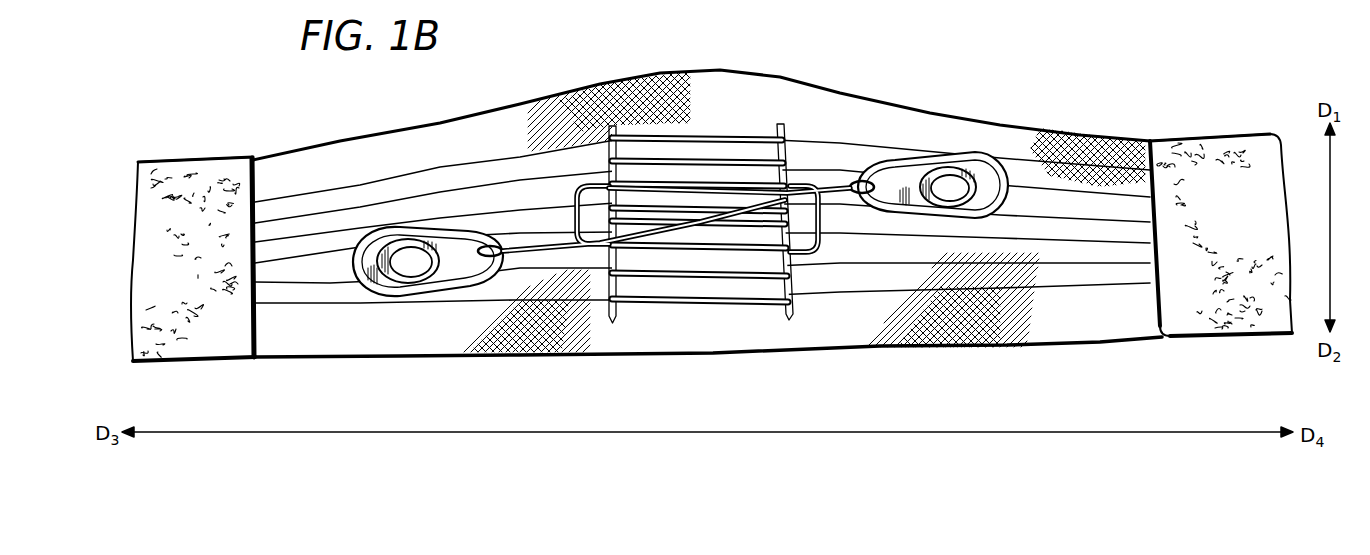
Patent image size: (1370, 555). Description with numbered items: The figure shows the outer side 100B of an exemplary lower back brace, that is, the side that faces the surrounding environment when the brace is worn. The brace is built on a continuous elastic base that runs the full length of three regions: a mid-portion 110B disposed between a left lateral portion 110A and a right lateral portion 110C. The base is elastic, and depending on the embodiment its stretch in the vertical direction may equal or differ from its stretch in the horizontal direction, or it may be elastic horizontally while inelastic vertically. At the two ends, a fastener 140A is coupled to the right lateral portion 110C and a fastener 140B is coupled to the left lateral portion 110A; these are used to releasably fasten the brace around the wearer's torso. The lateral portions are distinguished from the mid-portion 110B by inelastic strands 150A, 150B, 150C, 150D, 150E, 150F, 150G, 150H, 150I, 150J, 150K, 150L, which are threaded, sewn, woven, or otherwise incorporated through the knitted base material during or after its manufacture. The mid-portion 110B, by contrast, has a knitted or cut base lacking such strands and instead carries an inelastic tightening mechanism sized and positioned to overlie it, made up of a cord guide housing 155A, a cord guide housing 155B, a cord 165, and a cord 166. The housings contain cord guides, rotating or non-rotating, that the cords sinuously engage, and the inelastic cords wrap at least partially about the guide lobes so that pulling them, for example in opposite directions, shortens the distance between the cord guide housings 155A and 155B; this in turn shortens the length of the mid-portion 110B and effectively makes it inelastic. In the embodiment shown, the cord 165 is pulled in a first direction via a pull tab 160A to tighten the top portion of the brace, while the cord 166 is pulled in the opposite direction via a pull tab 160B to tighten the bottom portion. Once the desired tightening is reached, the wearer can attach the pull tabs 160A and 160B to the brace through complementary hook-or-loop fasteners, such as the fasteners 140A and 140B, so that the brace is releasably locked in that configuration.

The outer side 100B is at (1196, 67).
The left lateral portion 110A is at (480, 140).
The mid-portion 110B is at (707, 340).
The right lateral portion 110C is at (948, 322).
The fastener 140A is at (1230, 160).
The fastener 140B is at (183, 365).
The inelastic strand 150A is at (290, 197).
The inelastic strand 150B is at (363, 207).
The inelastic strand 150C is at (437, 218).
The inelastic strand 150D is at (273, 263).
The inelastic strand 150E is at (328, 283).
The inelastic strand 150F is at (360, 303).
The inelastic strand 150G is at (1017, 168).
The inelastic strand 150H is at (1073, 190).
The inelastic strand 150I is at (1113, 217).
The inelastic strand 150J is at (1043, 240).
The inelastic strand 150K is at (1070, 263).
The inelastic strand 150L is at (1127, 283).
The cord guide housing 155A is at (607, 150).
The cord guide housing 155B is at (783, 150).
The pull tab 160A is at (955, 153).
The pull tab 160B is at (430, 287).
The cord 165 is at (825, 188).
The cord 166 is at (563, 250).